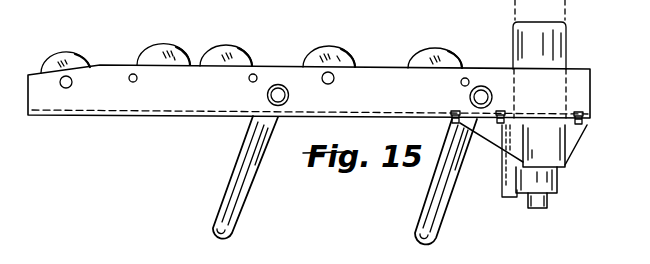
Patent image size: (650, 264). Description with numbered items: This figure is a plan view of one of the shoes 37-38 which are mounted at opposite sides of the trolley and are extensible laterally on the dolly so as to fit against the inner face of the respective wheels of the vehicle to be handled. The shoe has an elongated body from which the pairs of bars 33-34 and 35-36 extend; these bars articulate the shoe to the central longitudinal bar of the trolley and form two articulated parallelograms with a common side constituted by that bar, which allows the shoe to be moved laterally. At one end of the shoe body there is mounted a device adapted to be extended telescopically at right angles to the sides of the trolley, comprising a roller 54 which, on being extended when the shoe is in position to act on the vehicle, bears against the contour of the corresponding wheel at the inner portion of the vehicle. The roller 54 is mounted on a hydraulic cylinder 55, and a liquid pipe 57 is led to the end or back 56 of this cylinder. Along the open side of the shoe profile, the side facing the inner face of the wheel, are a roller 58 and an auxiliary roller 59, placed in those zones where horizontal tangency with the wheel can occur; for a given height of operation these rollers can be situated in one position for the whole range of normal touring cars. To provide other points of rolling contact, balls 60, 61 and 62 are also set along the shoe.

The shoes 37-38 is at (200, 102).
The pair of articulation bars 33-34 is at (237, 195).
The pair of articulation bars 35-36 is at (428, 212).
The roller 54 is at (525, 40).
The hydraulic cylinder 55 is at (557, 152).
The end or back of hydraulic cylinder 56 is at (543, 198).
The liquid pipe 57 is at (502, 197).
The roller 58 is at (335, 53).
The auxiliary roller 59 is at (71, 60).
The ball 60 is at (173, 55).
The ball 61 is at (235, 51).
The ball 62 is at (425, 57).